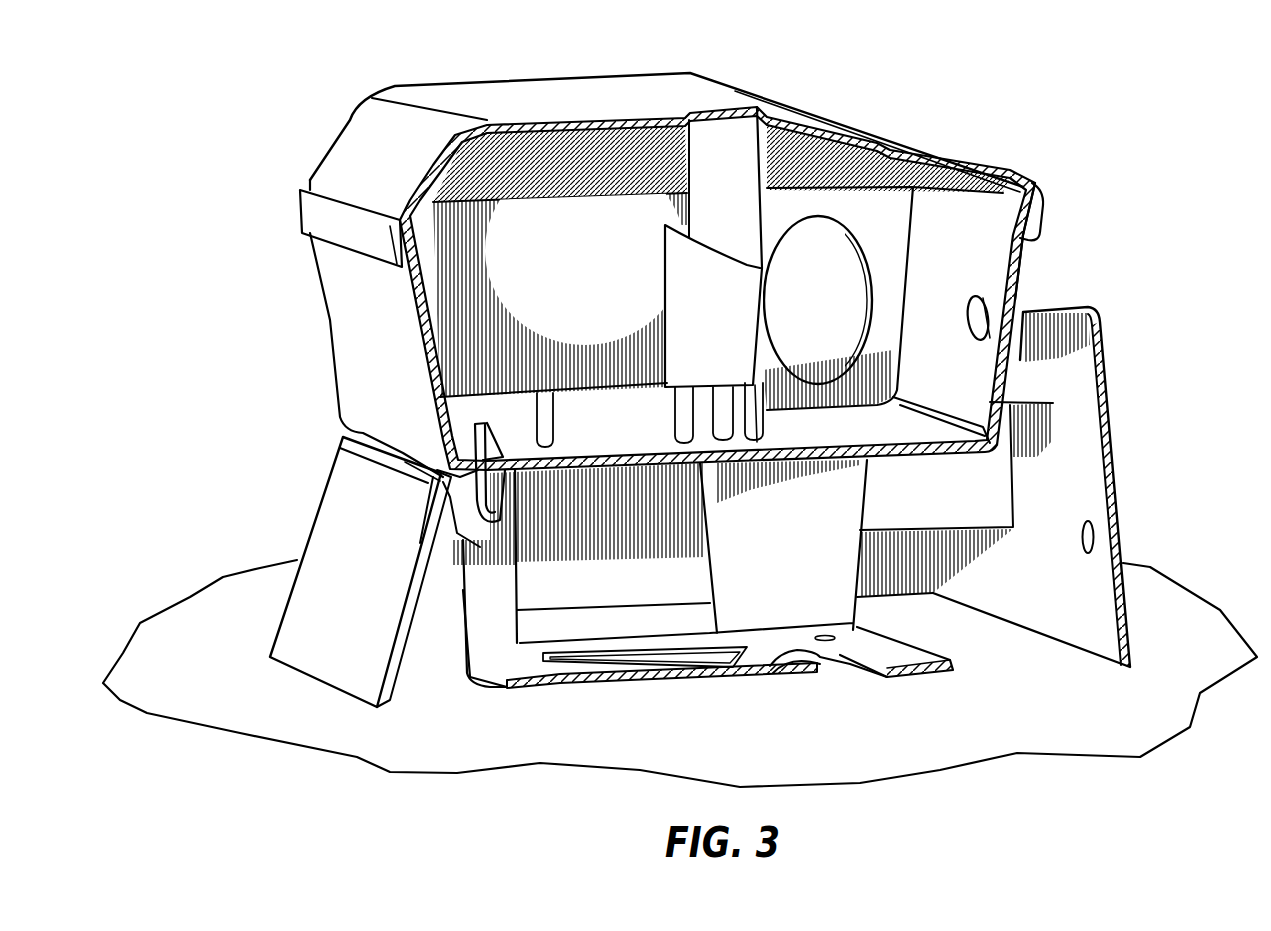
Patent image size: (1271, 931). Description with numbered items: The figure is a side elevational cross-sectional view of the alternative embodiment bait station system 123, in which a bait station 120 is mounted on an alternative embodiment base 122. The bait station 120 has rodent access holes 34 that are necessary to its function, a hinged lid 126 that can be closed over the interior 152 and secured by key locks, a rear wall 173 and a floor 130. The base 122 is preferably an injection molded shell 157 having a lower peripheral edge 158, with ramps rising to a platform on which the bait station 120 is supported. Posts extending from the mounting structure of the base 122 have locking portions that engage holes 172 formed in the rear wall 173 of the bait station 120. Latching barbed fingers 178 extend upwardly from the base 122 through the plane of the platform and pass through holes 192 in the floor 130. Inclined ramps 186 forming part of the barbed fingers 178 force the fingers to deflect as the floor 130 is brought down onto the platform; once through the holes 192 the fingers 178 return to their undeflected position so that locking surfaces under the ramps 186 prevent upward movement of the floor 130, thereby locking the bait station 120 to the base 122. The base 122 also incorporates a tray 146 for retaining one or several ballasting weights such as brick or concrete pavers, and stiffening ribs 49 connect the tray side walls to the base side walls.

The hinged lid 126 is at (538, 92).
The bait station 120 is at (967, 153).
The rear wall 173 is at (1023, 258).
The bait station system 123 is at (1097, 272).
The holes 172 is at (990, 307).
The rodent access holes 34 is at (863, 277).
The interior 152 is at (641, 264).
The latching barbed fingers 178 is at (483, 420).
The holes 192 is at (440, 427).
The inclined ramps 186 is at (493, 473).
The floor 130 is at (858, 444).
The base 122 is at (1117, 407).
The stiffening ribs 49 is at (425, 577).
The injection molded shell 157 is at (638, 594).
The lower peripheral edge 158 is at (1040, 637).
The tray 146 is at (823, 670).